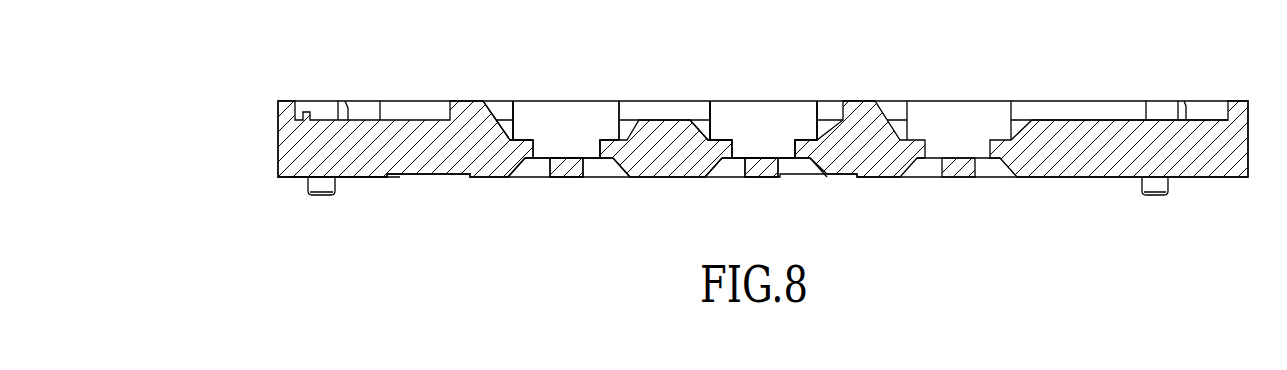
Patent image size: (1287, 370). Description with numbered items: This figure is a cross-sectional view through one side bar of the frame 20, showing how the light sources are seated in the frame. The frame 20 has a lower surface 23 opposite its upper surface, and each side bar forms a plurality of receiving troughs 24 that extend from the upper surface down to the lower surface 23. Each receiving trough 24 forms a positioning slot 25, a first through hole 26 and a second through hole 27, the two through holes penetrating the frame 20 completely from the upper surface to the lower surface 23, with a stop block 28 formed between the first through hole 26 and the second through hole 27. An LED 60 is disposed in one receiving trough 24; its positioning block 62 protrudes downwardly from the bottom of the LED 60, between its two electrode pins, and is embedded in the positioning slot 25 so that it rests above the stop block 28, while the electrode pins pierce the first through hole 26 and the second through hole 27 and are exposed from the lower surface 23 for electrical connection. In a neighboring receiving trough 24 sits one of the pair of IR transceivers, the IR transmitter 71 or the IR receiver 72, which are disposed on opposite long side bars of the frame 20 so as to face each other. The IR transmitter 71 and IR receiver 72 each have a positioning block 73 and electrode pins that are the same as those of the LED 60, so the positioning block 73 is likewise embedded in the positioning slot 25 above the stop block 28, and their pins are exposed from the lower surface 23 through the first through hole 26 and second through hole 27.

The frame 20 is at (280, 149).
The lower surface 23 is at (357, 178).
The receiving trough 24 is at (510, 117).
The positioning slot 25 is at (595, 160).
The first through hole 26 is at (521, 173).
The second through hole 27 is at (614, 174).
The stop block 28 is at (568, 172).
The LED 60 is at (560, 117).
The positioning block 62 is at (543, 162).
The IR transmitter 71 is at (757, 117).
The IR receiver 72 is at (763, 129).
The positioning block 73 is at (739, 162).